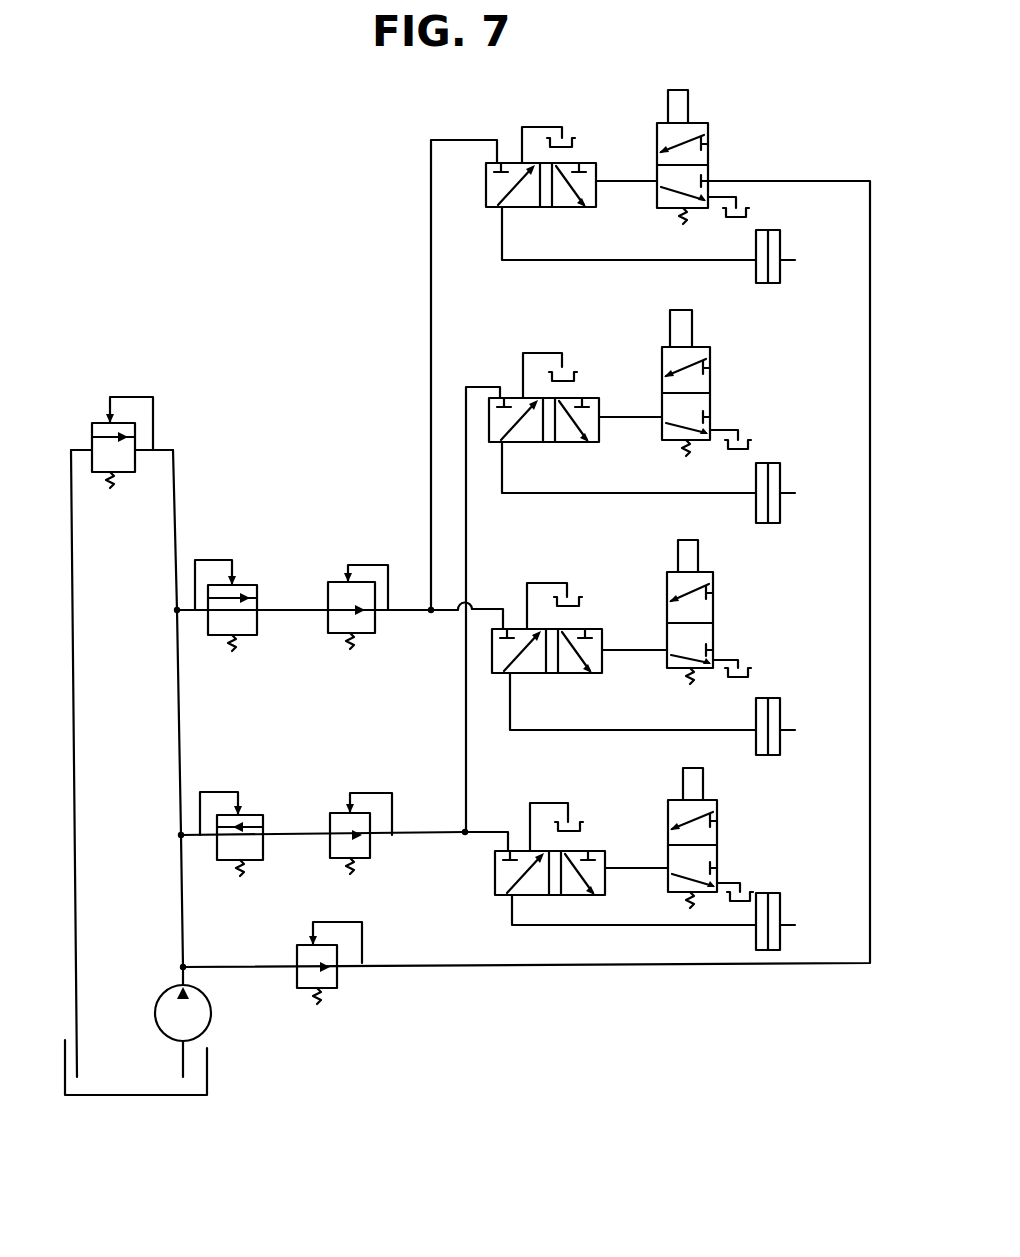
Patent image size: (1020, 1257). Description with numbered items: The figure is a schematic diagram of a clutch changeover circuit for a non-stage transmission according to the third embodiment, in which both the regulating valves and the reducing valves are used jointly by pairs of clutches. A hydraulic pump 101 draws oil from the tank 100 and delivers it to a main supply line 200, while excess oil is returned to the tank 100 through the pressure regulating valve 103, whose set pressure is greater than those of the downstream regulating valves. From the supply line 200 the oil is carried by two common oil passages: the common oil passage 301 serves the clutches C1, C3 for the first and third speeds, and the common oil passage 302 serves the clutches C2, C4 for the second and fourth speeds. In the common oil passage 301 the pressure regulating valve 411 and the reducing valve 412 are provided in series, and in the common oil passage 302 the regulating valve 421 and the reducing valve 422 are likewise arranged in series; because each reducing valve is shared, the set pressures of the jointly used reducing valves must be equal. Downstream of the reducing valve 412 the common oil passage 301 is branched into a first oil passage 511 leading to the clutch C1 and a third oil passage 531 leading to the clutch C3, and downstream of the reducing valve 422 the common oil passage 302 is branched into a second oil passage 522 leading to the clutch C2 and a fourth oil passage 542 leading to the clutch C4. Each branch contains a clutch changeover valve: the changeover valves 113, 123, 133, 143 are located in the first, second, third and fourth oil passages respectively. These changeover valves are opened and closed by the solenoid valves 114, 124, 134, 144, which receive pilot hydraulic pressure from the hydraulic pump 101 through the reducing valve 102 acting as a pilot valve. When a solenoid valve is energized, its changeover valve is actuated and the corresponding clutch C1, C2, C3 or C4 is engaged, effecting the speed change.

The tank 100 is at (207, 1085).
The hydraulic pump 101 is at (210, 1023).
The reducing valve 102 is at (337, 975).
The pressure regulating valve 103 is at (100, 420).
The main pressure line 200 is at (179, 703).
The common oil passage 301 is at (285, 830).
The common oil passage 302 is at (292, 608).
The pressure regulating valve 411 is at (257, 865).
The reducing valve 412 is at (368, 860).
The regulating valve 421 is at (252, 640).
The reducing valve 422 is at (370, 638).
The first oil passage 511 is at (492, 830).
The second oil passage 522 is at (488, 606).
The third oil passage 531 is at (483, 385).
The fourth oil passage 542 is at (430, 326).
The changeover valve 113 is at (500, 895).
The changeover valve 123 is at (575, 673).
The changeover valve 133 is at (598, 397).
The changeover valve 143 is at (598, 160).
The solenoid valve 114 is at (717, 812).
The solenoid valve 124 is at (713, 595).
The solenoid valve 134 is at (710, 380).
The solenoid valve 144 is at (710, 150).
The clutch C1 is at (770, 893).
The clutch C2 is at (770, 697).
The clutch C3 is at (770, 462).
The clutch C4 is at (770, 229).